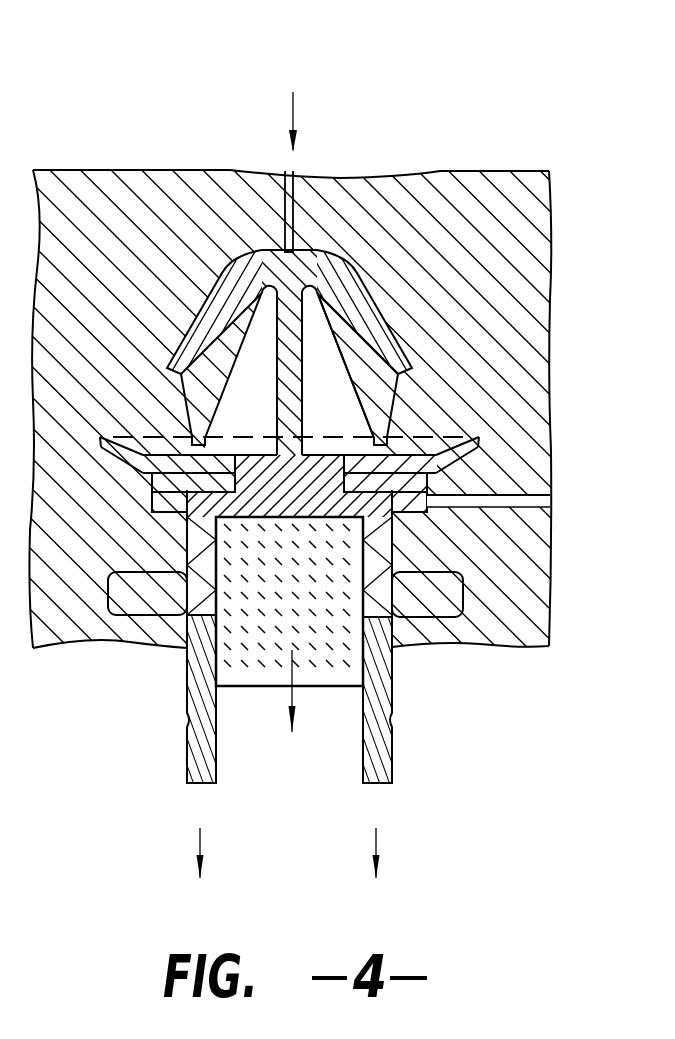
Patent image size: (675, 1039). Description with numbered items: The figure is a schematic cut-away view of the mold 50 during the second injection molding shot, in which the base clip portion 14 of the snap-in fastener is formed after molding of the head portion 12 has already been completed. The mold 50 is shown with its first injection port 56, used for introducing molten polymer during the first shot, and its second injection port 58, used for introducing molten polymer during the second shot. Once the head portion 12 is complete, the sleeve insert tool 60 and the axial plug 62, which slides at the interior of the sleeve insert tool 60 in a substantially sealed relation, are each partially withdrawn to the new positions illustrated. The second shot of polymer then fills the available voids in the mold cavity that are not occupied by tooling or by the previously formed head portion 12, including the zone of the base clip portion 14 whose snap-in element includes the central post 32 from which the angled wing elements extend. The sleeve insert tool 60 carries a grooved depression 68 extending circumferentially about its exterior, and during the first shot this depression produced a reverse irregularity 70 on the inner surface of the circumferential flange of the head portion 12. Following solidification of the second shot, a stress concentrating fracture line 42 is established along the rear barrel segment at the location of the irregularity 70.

The head portion 12 is at (478, 600).
The base clip portion 14 is at (217, 285).
The central post 32 is at (307, 352).
The stress concentrating fracture line 42 is at (188, 593).
The mold 50 is at (519, 89).
The first injection port 56 is at (522, 493).
The second injection port 58 is at (297, 203).
The sleeve insert tool 60 is at (371, 784).
The axial plug 62 is at (240, 690).
The grooved depression 68 is at (388, 716).
The reverse irregularity 70 is at (387, 592).